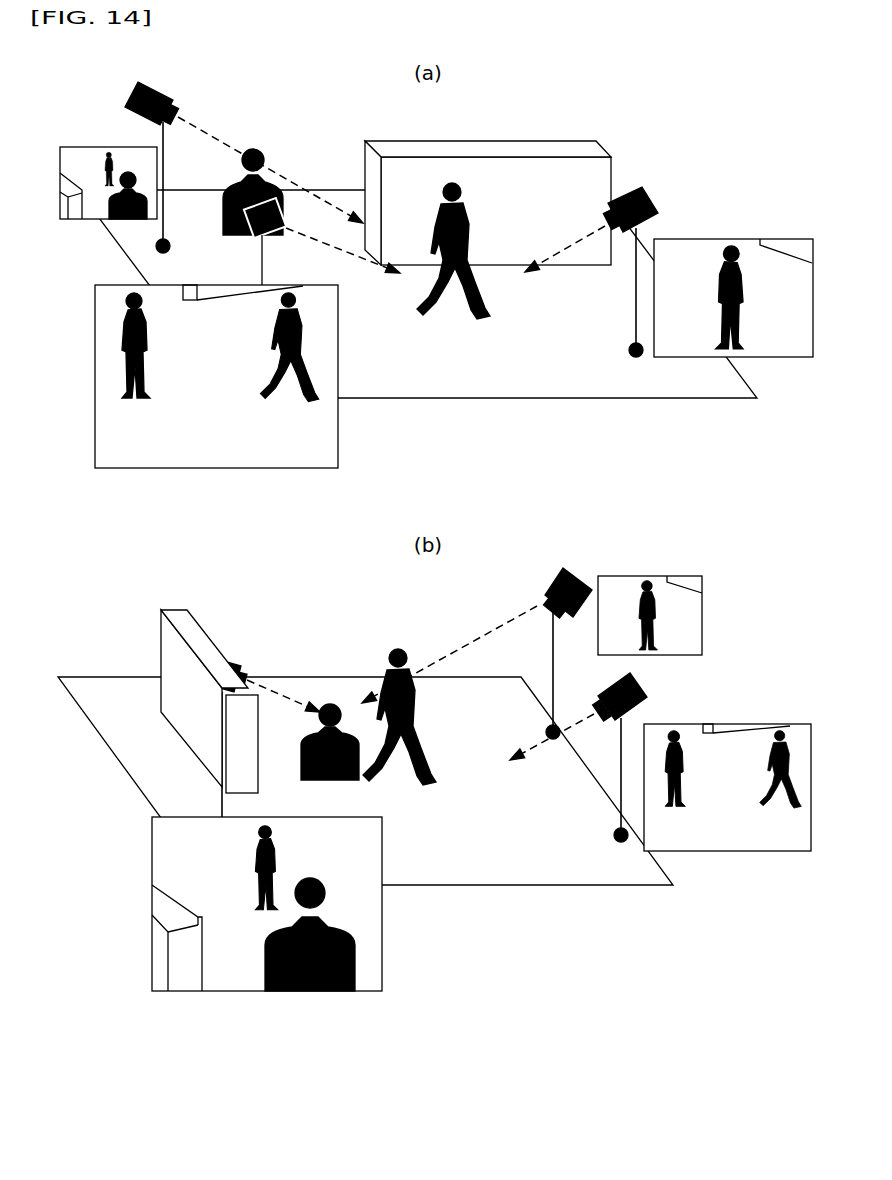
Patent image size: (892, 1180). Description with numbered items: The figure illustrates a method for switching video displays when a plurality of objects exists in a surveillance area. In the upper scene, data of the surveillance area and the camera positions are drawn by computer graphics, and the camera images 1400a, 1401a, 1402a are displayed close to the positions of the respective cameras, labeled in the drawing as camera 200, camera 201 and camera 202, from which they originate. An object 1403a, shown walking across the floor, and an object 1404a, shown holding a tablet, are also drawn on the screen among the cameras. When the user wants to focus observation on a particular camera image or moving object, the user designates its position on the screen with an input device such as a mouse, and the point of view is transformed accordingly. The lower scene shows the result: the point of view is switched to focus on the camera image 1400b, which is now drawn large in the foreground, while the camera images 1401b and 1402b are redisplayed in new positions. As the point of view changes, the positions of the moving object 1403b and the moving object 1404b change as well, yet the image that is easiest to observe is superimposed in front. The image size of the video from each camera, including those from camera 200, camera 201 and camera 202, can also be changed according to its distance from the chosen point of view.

The camera image 1400a is at (90, 221).
The camera image 1401a is at (339, 420).
The camera image 1402a is at (713, 237).
The object 1403a is at (492, 305).
The object 1404a is at (253, 148).
The camera image 1400b is at (152, 854).
The camera image 1401b is at (733, 852).
The camera image 1402b is at (703, 625).
The moving object 1403b is at (417, 722).
The moving object 1404b is at (330, 704).
The camera 200 is at (186, 449).
The camera 201 is at (620, 757).
The camera 202 is at (601, 463).